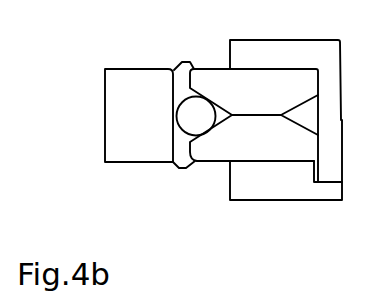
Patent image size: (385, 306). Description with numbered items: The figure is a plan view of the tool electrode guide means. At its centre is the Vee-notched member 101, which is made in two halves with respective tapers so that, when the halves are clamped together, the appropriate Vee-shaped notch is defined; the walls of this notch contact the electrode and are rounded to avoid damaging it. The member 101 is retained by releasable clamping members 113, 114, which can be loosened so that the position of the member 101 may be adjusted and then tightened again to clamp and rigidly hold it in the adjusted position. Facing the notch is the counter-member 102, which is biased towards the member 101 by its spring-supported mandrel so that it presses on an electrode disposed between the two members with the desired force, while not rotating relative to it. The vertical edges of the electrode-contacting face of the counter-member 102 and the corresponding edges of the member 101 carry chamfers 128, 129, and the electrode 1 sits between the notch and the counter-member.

The ball 1 is at (204, 116).
The Vee-notched member 101 is at (217, 150).
The counter-member 102 is at (122, 123).
The clamping member 113 is at (247, 52).
The clamping member 114 is at (284, 186).
The chamfer 128 is at (180, 166).
The chamfer 129 is at (185, 63).